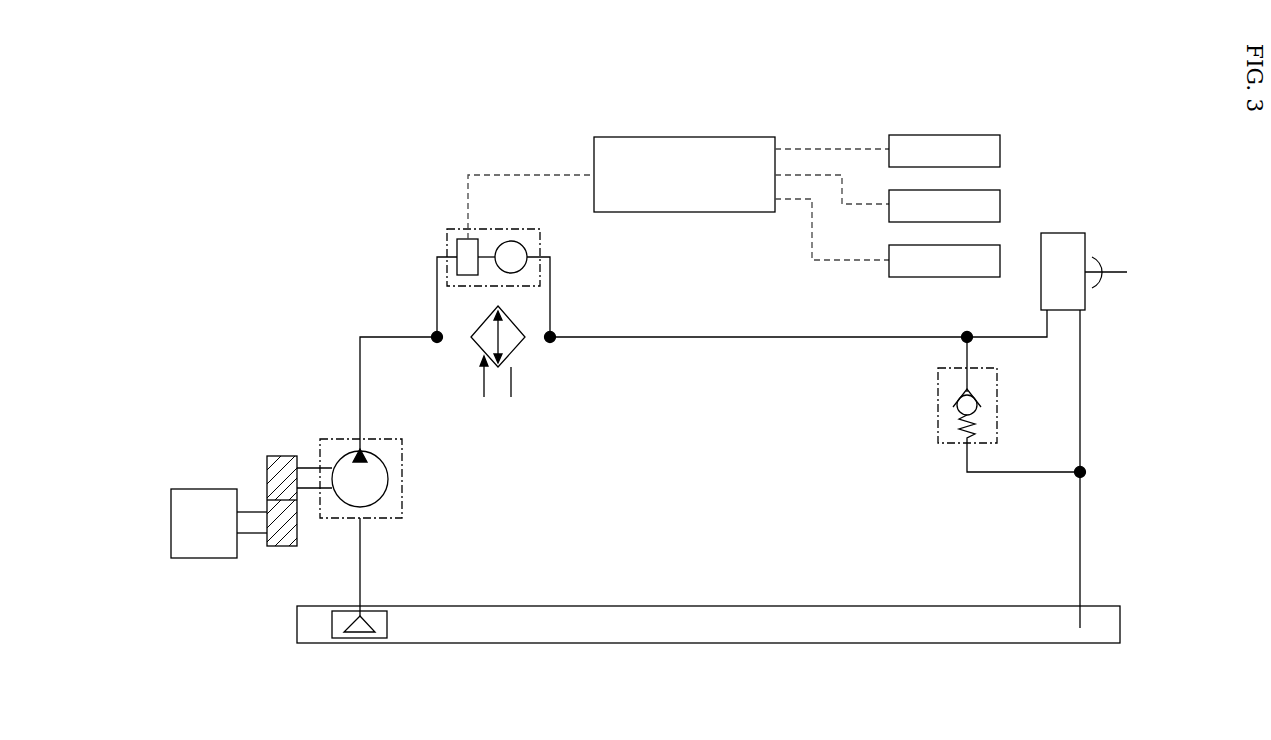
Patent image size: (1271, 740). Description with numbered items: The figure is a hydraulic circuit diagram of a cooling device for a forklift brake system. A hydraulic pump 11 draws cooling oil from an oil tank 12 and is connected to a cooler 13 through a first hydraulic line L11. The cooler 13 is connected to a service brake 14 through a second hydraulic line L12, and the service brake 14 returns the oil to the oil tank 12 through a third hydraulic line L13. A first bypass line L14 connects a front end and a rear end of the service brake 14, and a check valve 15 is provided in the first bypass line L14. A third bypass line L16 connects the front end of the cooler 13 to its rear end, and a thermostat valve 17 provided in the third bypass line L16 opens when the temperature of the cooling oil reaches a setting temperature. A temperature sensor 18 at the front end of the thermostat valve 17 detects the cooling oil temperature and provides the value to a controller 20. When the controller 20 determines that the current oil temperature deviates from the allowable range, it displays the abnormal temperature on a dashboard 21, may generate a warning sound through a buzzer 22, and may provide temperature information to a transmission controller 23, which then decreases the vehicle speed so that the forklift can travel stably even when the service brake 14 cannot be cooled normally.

The hydraulic pump 11 is at (389, 477).
The oil tank 12 is at (662, 606).
The cooler 13 is at (517, 350).
The service brake 14 is at (1080, 243).
The check valve 15 is at (956, 400).
The thermostat valve 17 is at (527, 251).
The temperature sensor 18 is at (456, 245).
The controller 20 is at (690, 137).
The dashboard 21 is at (1000, 141).
The buzzer 22 is at (1000, 196).
The transmission controller 23 is at (1000, 247).
The first hydraulic line L11 is at (360, 383).
The second hydraulic line L12 is at (722, 335).
The third hydraulic line L13 is at (1081, 388).
The first bypass line L14 is at (1020, 473).
The third bypass line L16 is at (552, 298).